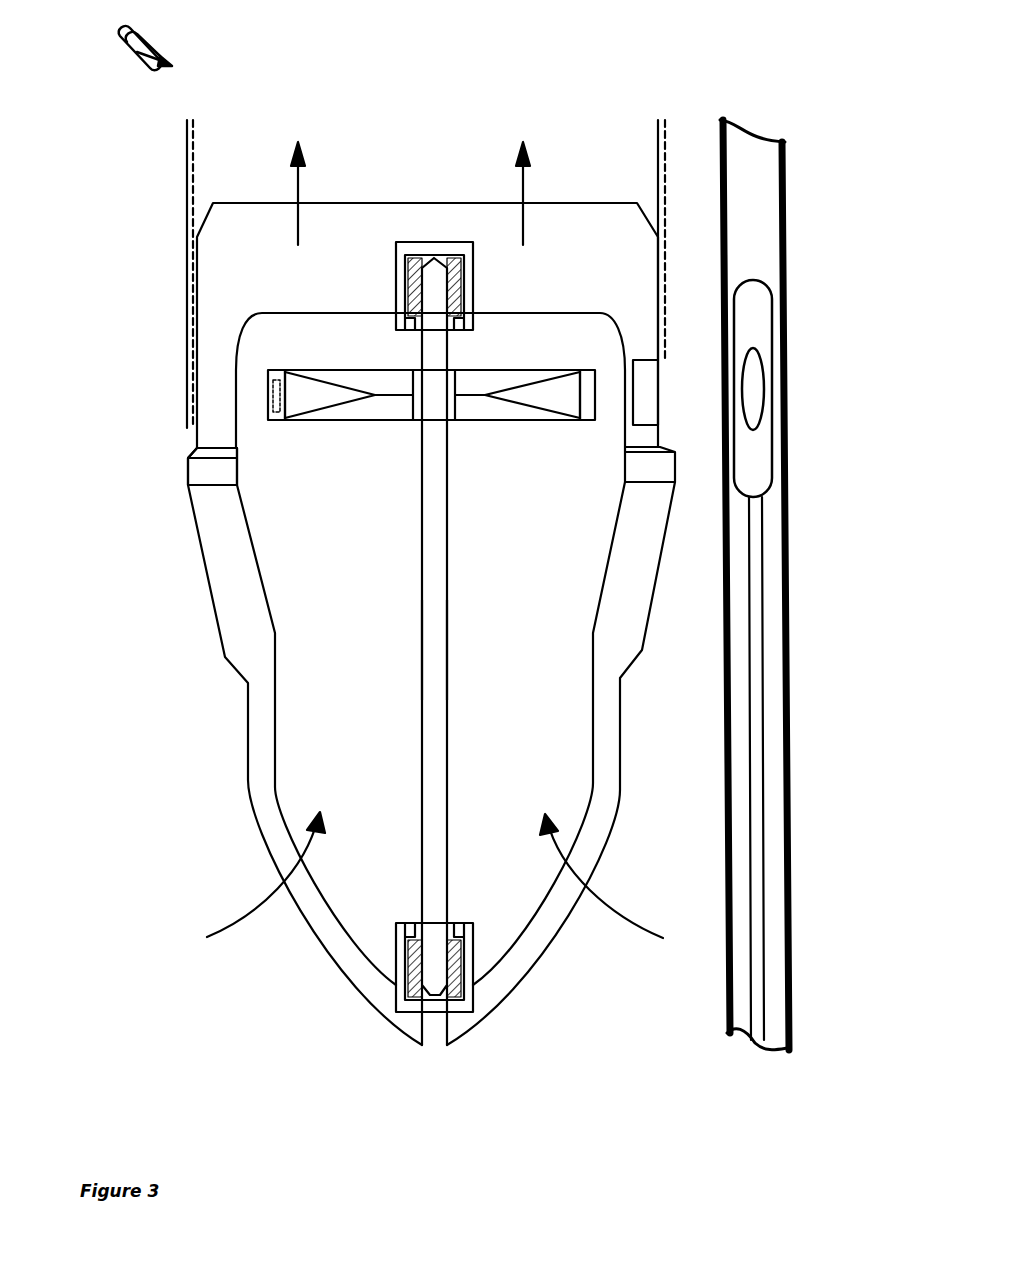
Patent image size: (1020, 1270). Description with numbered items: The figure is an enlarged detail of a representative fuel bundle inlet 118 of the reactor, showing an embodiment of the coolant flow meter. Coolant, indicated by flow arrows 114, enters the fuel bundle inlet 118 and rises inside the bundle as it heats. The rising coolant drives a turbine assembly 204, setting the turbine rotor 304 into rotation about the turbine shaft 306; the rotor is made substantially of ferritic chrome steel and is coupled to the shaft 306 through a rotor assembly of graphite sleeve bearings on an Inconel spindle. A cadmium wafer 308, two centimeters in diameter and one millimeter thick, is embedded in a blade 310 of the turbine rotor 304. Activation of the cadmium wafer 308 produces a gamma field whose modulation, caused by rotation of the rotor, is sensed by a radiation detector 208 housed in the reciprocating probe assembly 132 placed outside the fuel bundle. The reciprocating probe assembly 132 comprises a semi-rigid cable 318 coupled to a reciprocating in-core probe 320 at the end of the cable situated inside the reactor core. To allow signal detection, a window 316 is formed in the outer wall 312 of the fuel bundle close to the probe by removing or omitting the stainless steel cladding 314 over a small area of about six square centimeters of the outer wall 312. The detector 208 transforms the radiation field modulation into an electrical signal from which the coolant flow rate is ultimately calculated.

The air flow 114 is at (298, 188).
The fuel bundle inlet 118 is at (125, 32).
The reciprocating probe assembly 132 is at (786, 207).
The turbine assembly 204 is at (415, 582).
The radiation detector 208 is at (753, 372).
The turbine rotor 304 is at (343, 415).
The turbine shaft 306 is at (437, 627).
The cadmium wafer 308 is at (267, 391).
The blade 310 is at (277, 382).
The outer wall 312 is at (188, 440).
The stainless steel cladding 314 is at (185, 180).
The window 316 is at (652, 400).
The semi-rigid cable 318 is at (755, 557).
The reciprocating in-core probe 320 is at (775, 300).